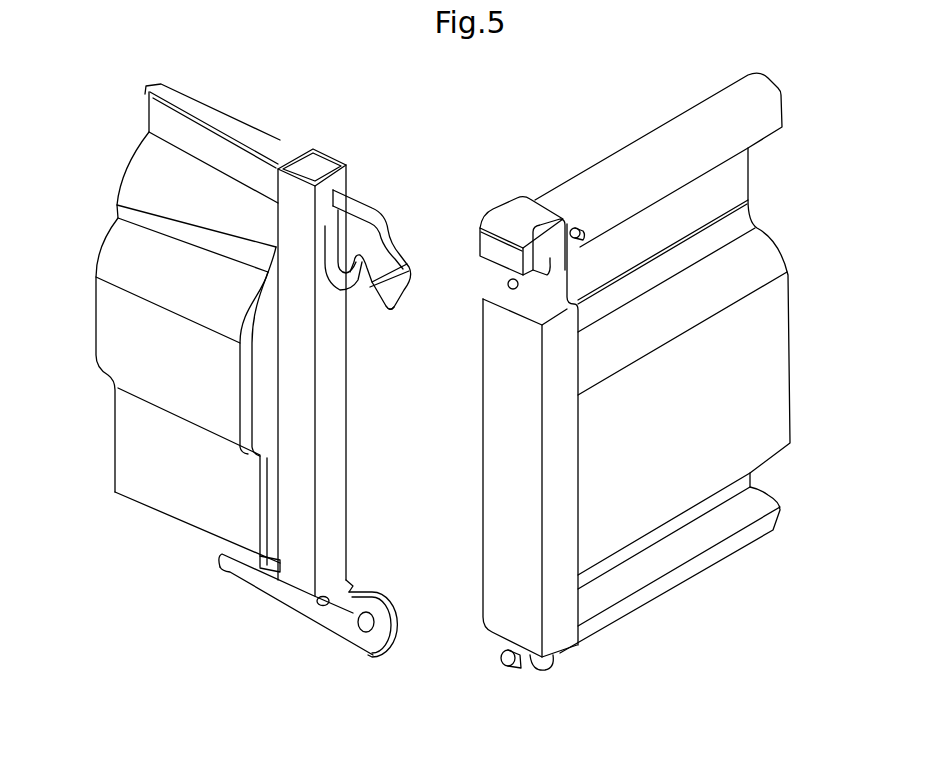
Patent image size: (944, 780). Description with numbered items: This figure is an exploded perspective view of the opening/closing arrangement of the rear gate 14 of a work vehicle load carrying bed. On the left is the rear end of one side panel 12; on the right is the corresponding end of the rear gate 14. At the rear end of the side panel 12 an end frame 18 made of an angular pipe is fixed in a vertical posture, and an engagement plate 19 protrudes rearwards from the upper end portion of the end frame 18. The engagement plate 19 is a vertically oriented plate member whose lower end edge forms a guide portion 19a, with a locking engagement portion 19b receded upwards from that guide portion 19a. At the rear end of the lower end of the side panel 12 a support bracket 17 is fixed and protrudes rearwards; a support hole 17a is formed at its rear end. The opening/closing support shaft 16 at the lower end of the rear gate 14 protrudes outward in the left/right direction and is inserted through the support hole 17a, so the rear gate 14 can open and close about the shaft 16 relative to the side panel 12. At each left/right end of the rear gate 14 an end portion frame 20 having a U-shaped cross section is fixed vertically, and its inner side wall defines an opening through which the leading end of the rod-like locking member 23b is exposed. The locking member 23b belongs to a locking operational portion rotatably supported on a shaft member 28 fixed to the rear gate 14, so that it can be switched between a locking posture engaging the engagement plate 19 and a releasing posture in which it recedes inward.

The side panel 12 is at (123, 255).
The rear gate 14 is at (772, 375).
The opening/closing support shaft 16 is at (502, 664).
The support bracket 17 is at (275, 588).
The support hole 17a is at (363, 623).
The end frame 18 is at (333, 458).
The engagement plate 19 is at (388, 235).
The guide portion 19a is at (380, 297).
The locking engagement portion 19b is at (325, 150).
The end portion frame 20 is at (560, 470).
The locking member 23b is at (508, 283).
The shaft member 28 is at (584, 238).